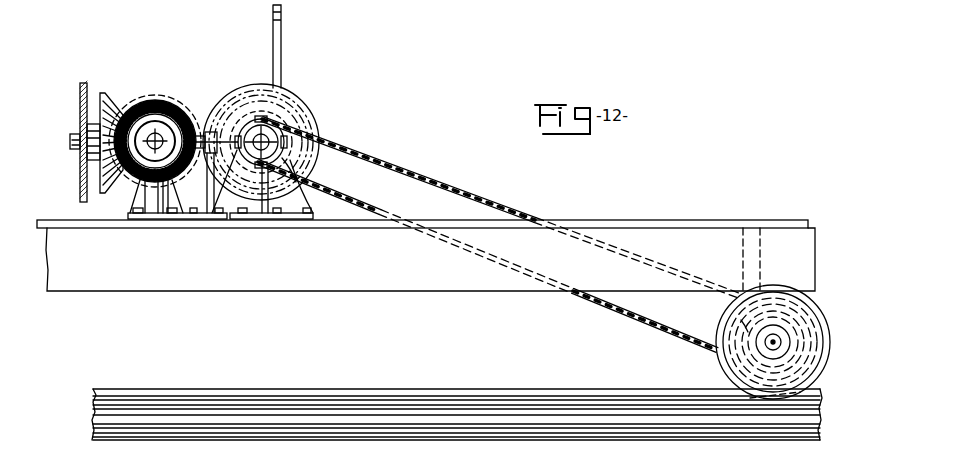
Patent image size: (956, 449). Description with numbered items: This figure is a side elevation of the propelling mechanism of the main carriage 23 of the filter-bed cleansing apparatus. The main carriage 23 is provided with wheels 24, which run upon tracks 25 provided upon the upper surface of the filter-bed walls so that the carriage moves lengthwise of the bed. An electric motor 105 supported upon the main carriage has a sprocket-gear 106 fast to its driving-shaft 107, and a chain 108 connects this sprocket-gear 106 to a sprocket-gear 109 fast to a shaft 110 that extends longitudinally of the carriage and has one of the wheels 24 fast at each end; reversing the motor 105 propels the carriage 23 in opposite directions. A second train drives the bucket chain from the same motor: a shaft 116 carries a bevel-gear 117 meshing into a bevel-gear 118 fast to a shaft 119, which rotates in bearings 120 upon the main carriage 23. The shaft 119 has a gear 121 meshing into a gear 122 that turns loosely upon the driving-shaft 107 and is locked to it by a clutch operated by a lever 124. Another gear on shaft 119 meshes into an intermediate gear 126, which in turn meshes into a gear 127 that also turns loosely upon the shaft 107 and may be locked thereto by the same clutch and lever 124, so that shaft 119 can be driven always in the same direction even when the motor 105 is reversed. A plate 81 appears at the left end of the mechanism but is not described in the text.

The main carriage 23 is at (667, 232).
The wheels 24 is at (747, 318).
The tracks 25 is at (432, 400).
The mounting plate 81 is at (80, 176).
The electric motor 105 is at (252, 84).
The sprocket-gear 106 is at (277, 122).
The driving-shaft 107 is at (270, 142).
The chain 108 is at (457, 190).
The sprocket-gear 109 is at (800, 327).
The shaft 110 is at (771, 343).
The shaft 116 is at (72, 133).
The bevel-gear 117 is at (110, 97).
The bevel-gear 118 is at (127, 187).
The shaft 119 is at (156, 139).
The bearings 120 is at (158, 218).
The gear 121 is at (142, 90).
The gear 122 is at (297, 103).
The lever 124 is at (282, 30).
The intermediate gear 126 is at (212, 167).
The gear 127 is at (290, 160).